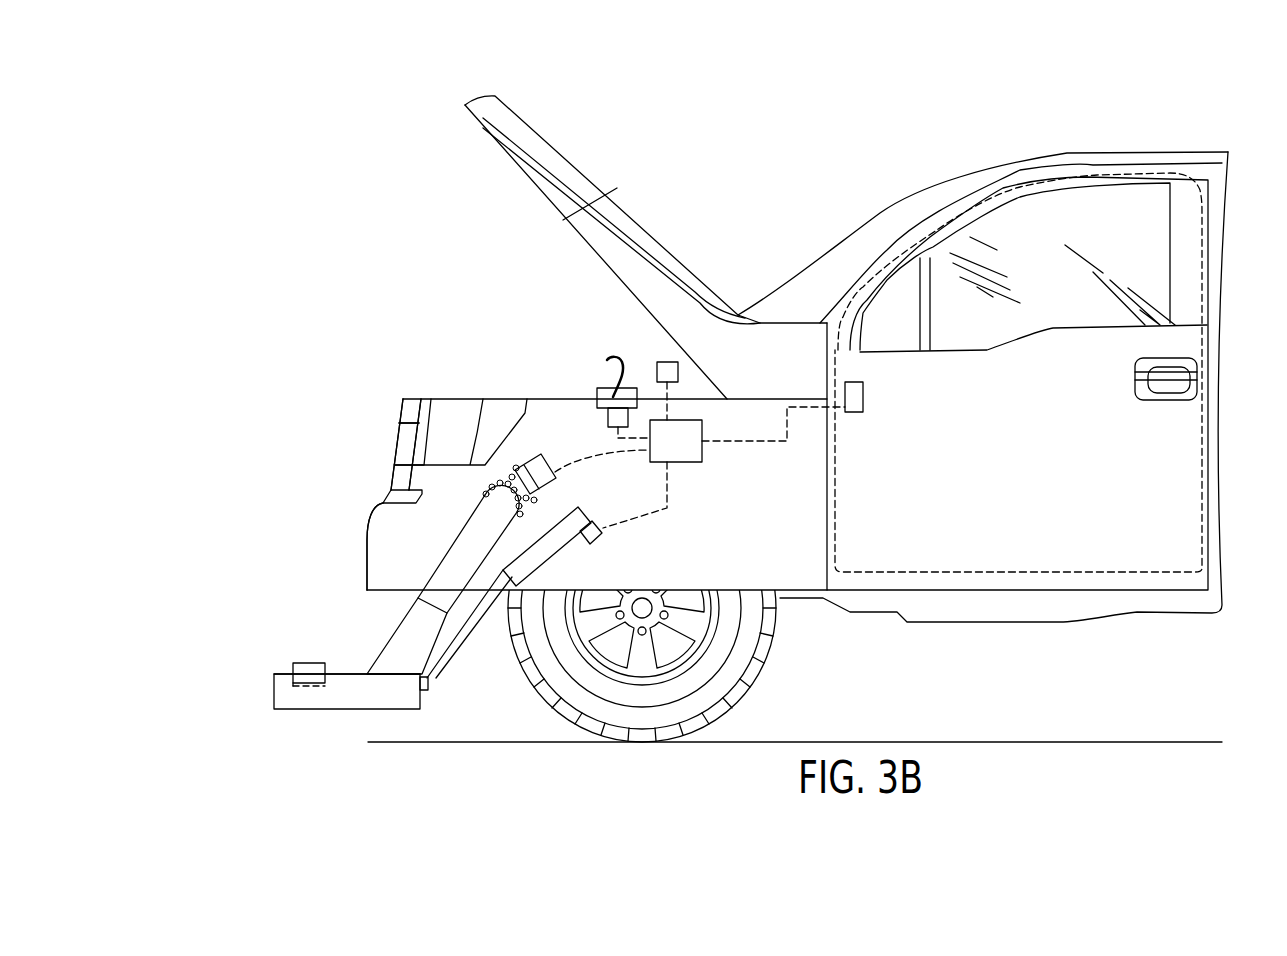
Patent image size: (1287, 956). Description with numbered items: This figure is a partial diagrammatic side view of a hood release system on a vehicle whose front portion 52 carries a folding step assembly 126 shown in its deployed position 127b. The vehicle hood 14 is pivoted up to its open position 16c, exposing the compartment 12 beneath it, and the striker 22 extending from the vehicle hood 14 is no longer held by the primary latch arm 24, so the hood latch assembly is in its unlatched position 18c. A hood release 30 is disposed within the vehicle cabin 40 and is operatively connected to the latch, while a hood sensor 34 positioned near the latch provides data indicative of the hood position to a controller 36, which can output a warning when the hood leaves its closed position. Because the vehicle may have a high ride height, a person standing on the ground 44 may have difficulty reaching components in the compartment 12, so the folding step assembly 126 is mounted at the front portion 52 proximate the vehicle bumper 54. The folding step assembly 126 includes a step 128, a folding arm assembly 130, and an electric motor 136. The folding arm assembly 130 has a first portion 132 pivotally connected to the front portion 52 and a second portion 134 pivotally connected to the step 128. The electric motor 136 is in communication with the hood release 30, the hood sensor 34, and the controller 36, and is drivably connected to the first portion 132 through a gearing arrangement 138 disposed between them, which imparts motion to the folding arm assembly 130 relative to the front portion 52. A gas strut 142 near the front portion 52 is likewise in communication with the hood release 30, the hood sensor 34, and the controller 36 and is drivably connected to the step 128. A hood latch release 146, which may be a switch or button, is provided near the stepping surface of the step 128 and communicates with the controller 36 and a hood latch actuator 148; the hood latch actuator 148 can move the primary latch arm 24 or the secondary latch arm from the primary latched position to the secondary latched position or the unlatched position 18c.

The compartment 12 is at (780, 553).
The vehicle hood 14 is at (575, 155).
The open position 16c is at (607, 157).
The unlatched position 18c is at (577, 372).
The striker 22 is at (590, 228).
The primary latch arm 24 is at (613, 388).
The hood release 30 is at (863, 400).
The hood sensor 34 is at (678, 380).
The controller 36 is at (692, 462).
The vehicle cabin 40 is at (1168, 570).
The ground 44 is at (465, 742).
The front portion 52 is at (387, 517).
The vehicle bumper 54 is at (367, 550).
The folding step assembly 126 is at (310, 700).
The deployed position 127b is at (275, 650).
The step 128 is at (312, 715).
The folding arm assembly 130 is at (432, 522).
The first portion 132 is at (440, 553).
The second portion 134 is at (390, 630).
The electric motor 136 is at (567, 492).
The gearing arrangement 138 is at (503, 477).
The gas strut 142 is at (560, 565).
The hood latch release 146 is at (292, 662).
The hood latch actuator 148 is at (608, 422).